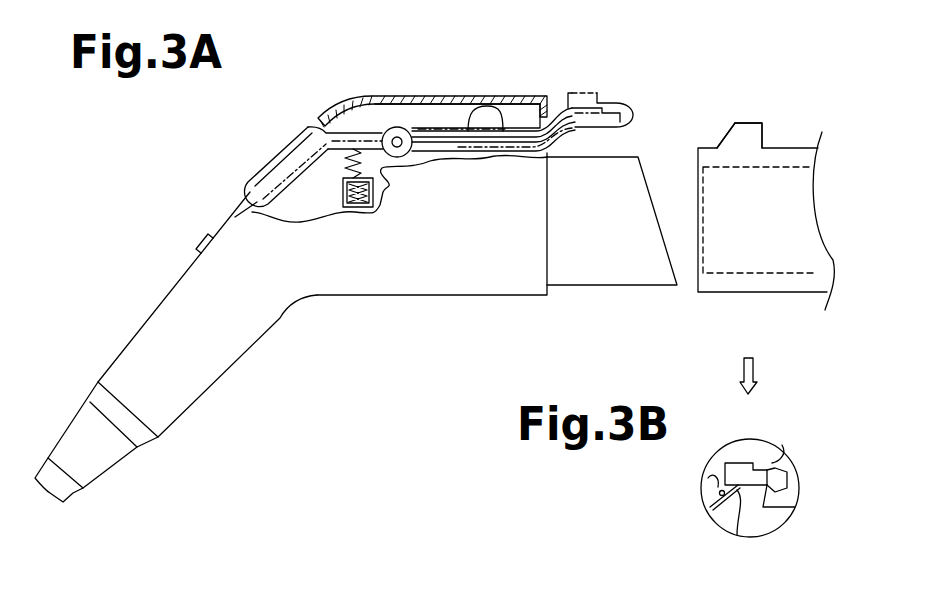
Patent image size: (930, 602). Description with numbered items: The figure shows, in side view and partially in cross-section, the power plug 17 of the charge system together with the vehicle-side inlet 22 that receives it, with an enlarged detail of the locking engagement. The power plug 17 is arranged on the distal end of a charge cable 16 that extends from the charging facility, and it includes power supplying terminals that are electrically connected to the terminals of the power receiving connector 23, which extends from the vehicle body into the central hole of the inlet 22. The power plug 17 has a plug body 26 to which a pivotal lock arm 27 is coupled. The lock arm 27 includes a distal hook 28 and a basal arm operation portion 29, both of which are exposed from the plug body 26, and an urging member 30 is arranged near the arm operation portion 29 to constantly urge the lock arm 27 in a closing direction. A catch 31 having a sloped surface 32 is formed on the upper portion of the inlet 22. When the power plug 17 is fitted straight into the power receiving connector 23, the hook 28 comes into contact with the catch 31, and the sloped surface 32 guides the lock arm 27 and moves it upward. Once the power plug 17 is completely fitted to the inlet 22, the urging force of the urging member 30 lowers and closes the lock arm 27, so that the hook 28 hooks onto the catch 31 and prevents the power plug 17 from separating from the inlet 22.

In FIG. 3A, the charge cable 16 is at (72, 497).
In FIG. 3A, the power plug 17 is at (472, 297).
In FIG. 3A, the inlet 22 is at (715, 285).
In FIG. 3B, the inlet 22 is at (790, 500).
In FIG. 3A, the power receiving connector 23 is at (795, 273).
In FIG. 3A, the plug body 26 is at (377, 285).
In FIG. 3A, the lock arm 27 is at (498, 118).
In FIG. 3B, the lock arm 27 is at (782, 445).
In FIG. 3A, the hook 28 is at (633, 118).
In FIG. 3B, the hook 28 is at (708, 478).
In FIG. 3A, the arm operation portion 29 is at (280, 150).
In FIG. 3A, the urging member 30 is at (387, 187).
In FIG. 3A, the catch 31 is at (758, 130).
In FIG. 3B, the catch 31 is at (777, 468).
In FIG. 3A, the sloped surface 32 is at (730, 130).
In FIG. 3B, the sloped surface 32 is at (737, 535).